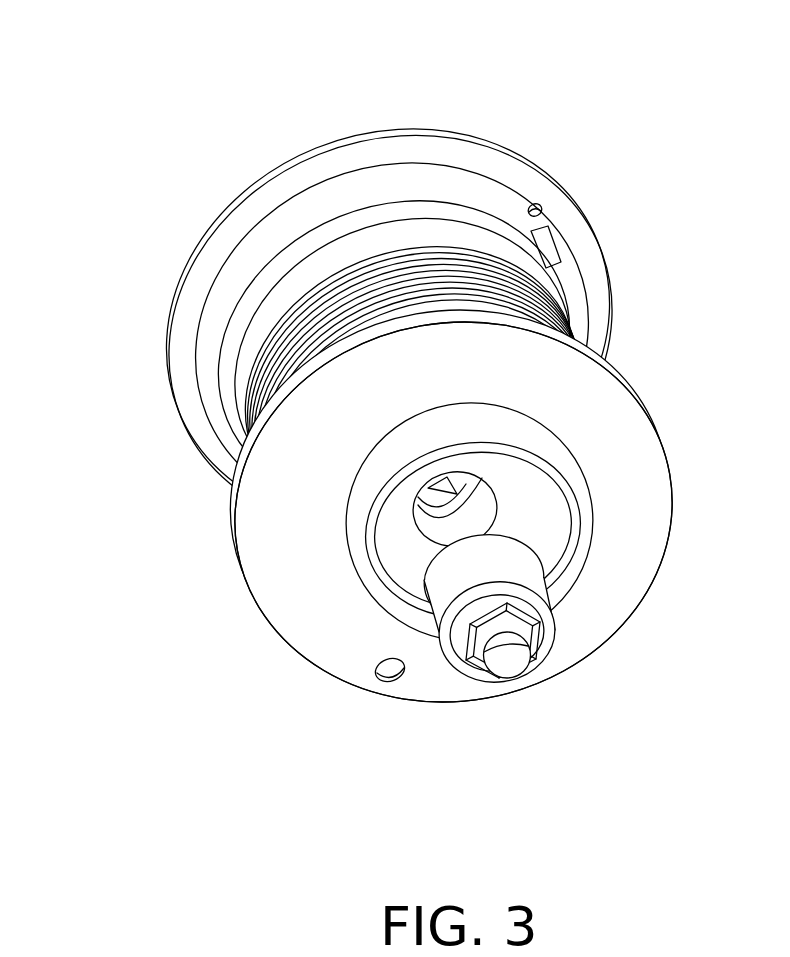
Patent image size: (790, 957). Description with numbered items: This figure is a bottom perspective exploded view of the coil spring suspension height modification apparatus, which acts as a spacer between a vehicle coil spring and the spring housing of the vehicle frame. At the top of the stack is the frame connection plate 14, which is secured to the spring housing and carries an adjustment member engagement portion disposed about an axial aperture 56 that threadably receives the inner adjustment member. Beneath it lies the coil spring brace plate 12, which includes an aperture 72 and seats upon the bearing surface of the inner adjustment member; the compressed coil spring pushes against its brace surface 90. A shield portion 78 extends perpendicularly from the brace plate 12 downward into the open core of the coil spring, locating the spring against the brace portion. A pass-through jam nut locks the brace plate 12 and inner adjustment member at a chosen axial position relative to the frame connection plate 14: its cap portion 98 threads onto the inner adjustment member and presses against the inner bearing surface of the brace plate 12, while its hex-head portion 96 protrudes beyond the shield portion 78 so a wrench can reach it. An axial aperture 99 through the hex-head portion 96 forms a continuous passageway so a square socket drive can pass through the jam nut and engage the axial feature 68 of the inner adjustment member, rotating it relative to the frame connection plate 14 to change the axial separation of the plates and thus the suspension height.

The coil spring brace plate 12 is at (278, 646).
The frame connection plate 14 is at (488, 128).
The axial aperture 56 is at (300, 281).
The axial feature 68 is at (453, 480).
The aperture 72 is at (398, 674).
The shield portion 78 is at (350, 506).
The brace surface 90 is at (629, 514).
The hex-head portion 96 is at (530, 668).
The cap portion 98 is at (567, 640).
The axial aperture 99 is at (512, 664).